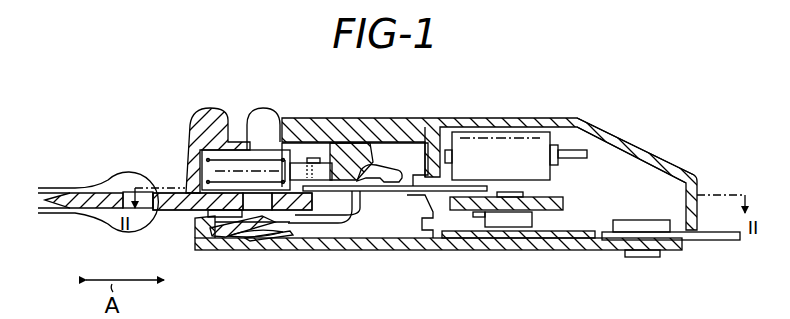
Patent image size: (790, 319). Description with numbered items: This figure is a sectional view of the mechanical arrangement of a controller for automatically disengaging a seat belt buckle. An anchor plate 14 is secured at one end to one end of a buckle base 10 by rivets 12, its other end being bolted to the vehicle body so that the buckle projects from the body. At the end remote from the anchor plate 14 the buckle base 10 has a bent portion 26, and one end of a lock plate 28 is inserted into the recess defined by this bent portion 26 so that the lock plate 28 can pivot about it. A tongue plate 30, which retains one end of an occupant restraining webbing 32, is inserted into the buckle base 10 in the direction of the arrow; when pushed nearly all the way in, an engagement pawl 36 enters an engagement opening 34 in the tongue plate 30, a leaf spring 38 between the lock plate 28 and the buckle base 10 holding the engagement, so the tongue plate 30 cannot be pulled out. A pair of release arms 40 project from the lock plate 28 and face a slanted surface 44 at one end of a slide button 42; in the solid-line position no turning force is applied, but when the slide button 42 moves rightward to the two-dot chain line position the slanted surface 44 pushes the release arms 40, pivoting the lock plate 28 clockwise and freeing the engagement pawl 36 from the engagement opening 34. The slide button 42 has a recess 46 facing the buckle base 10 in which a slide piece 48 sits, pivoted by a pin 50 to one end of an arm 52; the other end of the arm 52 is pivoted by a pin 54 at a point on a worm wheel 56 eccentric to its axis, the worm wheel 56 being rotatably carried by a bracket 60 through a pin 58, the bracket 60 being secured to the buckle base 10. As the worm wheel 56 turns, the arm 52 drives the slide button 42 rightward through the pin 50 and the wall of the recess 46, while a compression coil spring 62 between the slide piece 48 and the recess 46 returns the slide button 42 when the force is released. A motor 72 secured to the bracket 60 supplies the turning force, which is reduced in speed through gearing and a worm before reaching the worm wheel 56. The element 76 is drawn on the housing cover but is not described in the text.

The buckle base 10 is at (407, 251).
The rivets 12 is at (635, 258).
The anchor plate 14 is at (705, 242).
The bent portion 26 is at (196, 236).
The lock plate 28 is at (323, 196).
The tongue plate 30 is at (182, 194).
The occupant restraining webbing 32 is at (77, 188).
The engagement opening 34 is at (247, 238).
The engagement pawl 36 is at (272, 240).
The leaf spring 38 is at (284, 236).
The release arms 40 is at (362, 205).
The slide button 42 is at (262, 108).
The slanted surface 44 is at (378, 170).
The recess 46 is at (230, 176).
The slide piece 48 is at (331, 152).
The pin 50 is at (328, 192).
The arm 52 is at (437, 196).
The pin 54 is at (478, 218).
The worm wheel 56 is at (565, 203).
The pin 58 is at (503, 191).
The bracket 60 is at (515, 238).
The compression coil spring 62 is at (218, 120).
The motor 72 is at (470, 138).
The sloped cover 76 is at (618, 133).